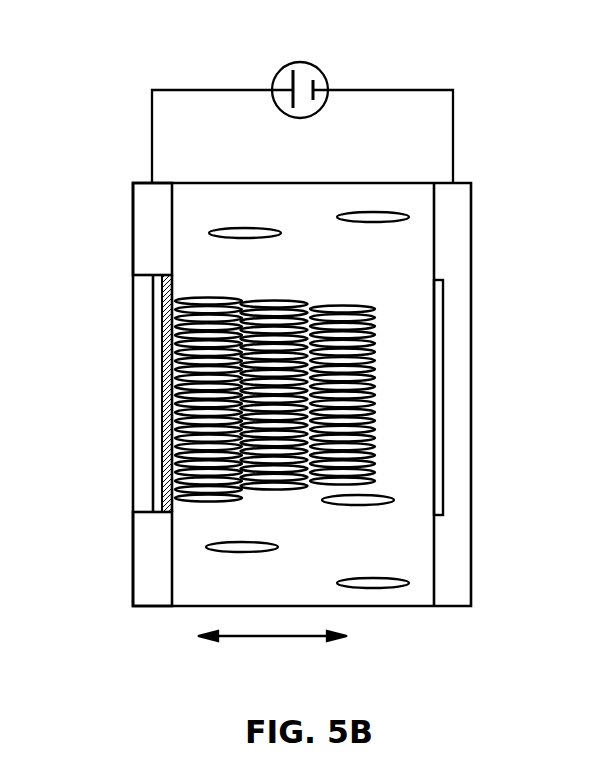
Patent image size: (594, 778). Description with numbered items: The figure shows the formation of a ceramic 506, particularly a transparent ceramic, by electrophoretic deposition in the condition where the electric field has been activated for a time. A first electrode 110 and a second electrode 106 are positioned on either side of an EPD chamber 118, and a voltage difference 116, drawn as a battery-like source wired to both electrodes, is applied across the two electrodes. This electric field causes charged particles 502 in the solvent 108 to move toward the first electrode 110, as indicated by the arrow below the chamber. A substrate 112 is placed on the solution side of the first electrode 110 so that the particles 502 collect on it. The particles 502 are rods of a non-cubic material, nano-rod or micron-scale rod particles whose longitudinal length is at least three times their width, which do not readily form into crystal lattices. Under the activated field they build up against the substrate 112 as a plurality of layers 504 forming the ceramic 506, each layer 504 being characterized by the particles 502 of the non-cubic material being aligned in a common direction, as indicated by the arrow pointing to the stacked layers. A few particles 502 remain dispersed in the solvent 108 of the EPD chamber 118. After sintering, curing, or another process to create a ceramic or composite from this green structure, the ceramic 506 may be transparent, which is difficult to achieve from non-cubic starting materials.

The voltage difference 116 is at (285, 68).
The first electrode 110 is at (158, 323).
The substrate 112 is at (168, 403).
The second electrode 106 is at (438, 390).
The solvent 108 is at (427, 401).
The particles 502 is at (240, 230).
The layers 504 is at (223, 297).
The ceramic 506 is at (380, 295).
The EPD chamber 118 is at (382, 615).